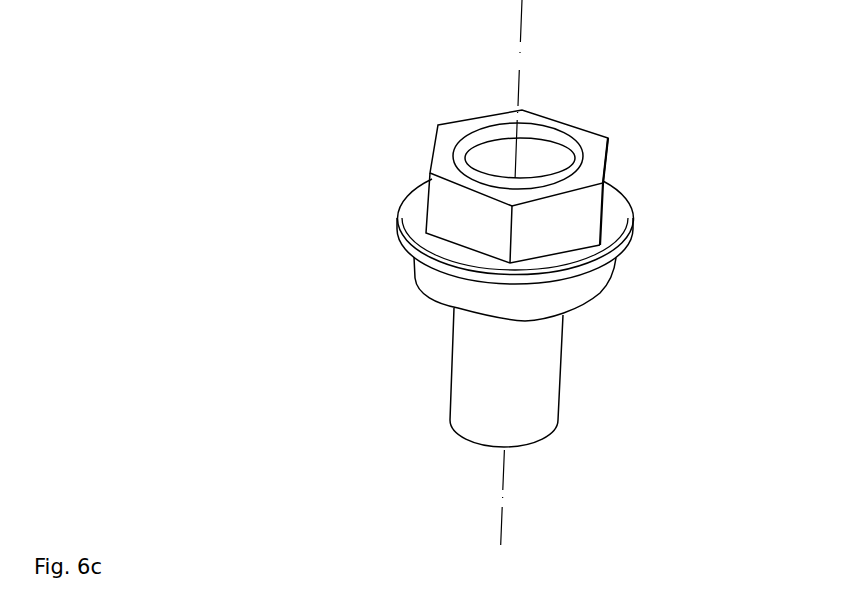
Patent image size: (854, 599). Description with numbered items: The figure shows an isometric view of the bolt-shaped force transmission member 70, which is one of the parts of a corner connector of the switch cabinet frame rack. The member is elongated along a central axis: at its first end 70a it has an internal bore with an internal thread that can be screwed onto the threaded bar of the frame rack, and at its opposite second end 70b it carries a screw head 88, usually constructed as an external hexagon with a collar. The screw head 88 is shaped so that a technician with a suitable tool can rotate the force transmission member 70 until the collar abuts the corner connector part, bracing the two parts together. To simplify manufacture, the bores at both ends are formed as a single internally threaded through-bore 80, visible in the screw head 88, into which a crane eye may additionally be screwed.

The force transmission member 70 is at (514, 251).
The first end 70a is at (525, 430).
The second end 70b is at (588, 131).
The through-bore 80 is at (508, 158).
The screw head 88 is at (452, 200).